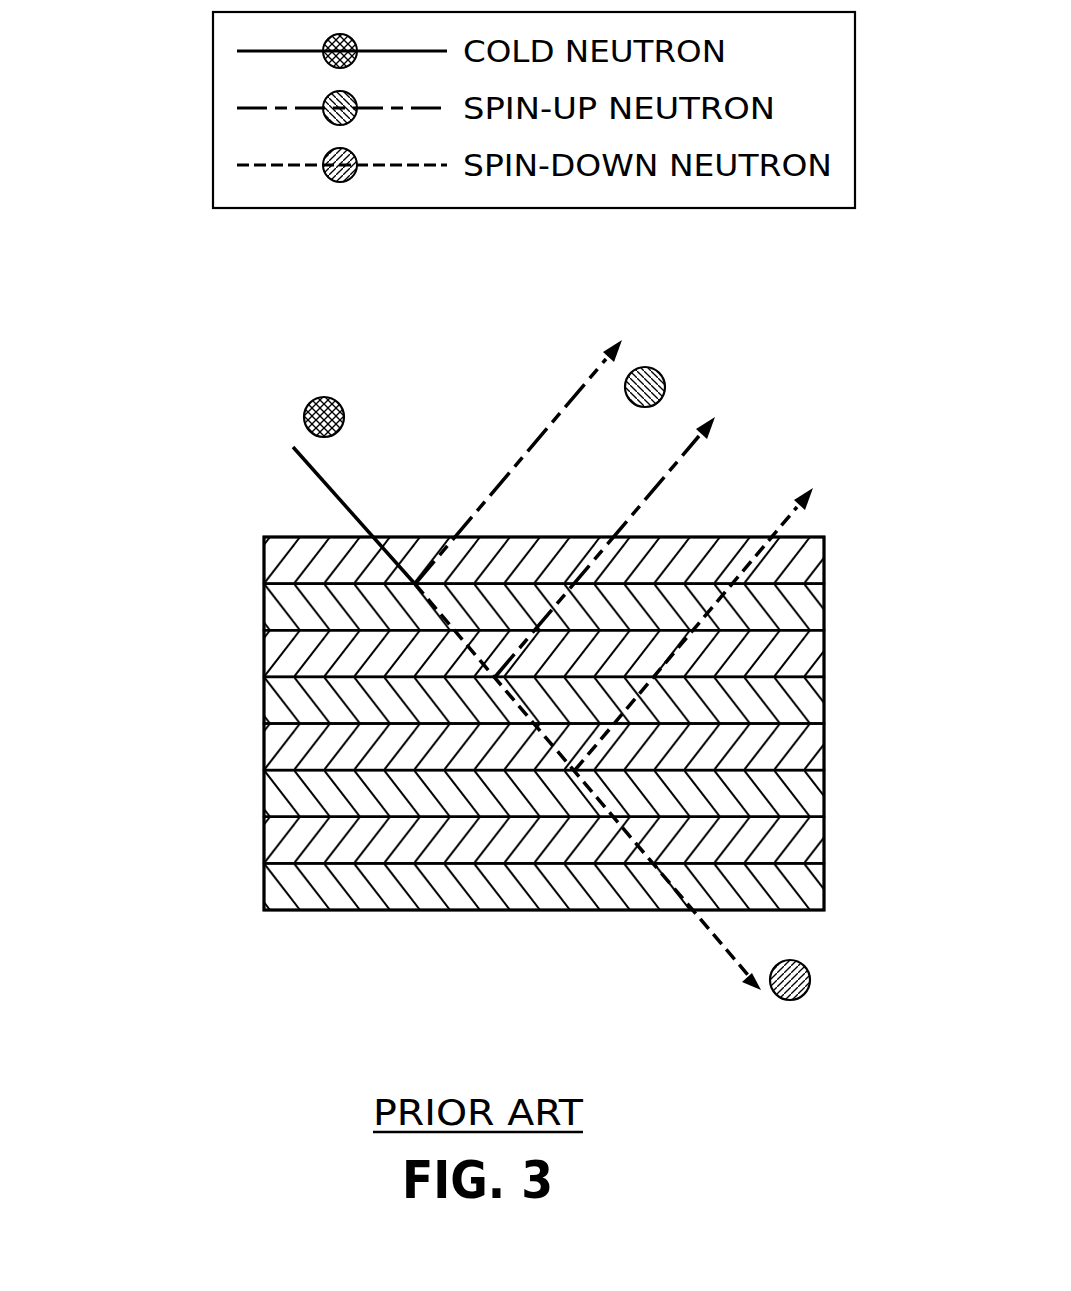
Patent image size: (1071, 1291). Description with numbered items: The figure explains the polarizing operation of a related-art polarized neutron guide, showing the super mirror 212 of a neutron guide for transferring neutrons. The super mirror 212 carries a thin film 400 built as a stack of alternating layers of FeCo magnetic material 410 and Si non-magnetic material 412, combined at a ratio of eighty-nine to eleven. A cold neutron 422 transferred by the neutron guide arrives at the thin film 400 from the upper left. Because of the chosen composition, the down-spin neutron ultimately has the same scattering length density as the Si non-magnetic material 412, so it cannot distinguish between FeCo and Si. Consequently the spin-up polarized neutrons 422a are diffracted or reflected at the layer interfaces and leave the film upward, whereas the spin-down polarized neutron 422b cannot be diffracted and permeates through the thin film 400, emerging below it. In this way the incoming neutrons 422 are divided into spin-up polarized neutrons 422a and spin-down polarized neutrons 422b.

The super mirror 212 is at (222, 473).
The thin film 400 is at (427, 722).
The magnetic material 410 is at (264, 612).
The non-magnetic material 412 is at (264, 560).
The neutron 422 is at (312, 398).
The spin-up polarized neutron 422a is at (832, 455).
The spin-down polarized neutron 422b is at (808, 992).